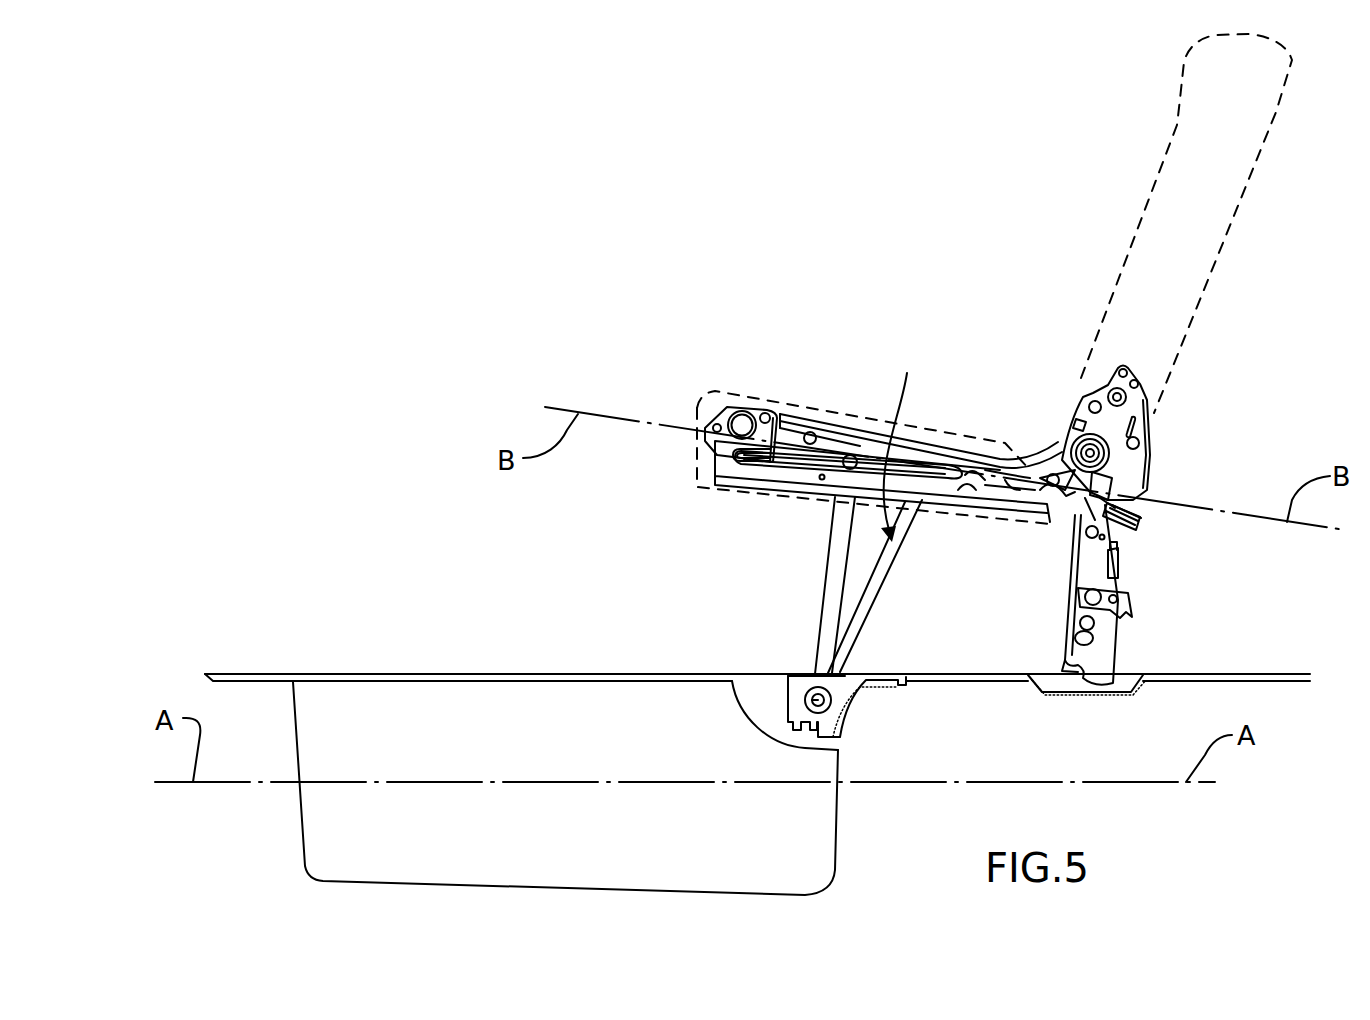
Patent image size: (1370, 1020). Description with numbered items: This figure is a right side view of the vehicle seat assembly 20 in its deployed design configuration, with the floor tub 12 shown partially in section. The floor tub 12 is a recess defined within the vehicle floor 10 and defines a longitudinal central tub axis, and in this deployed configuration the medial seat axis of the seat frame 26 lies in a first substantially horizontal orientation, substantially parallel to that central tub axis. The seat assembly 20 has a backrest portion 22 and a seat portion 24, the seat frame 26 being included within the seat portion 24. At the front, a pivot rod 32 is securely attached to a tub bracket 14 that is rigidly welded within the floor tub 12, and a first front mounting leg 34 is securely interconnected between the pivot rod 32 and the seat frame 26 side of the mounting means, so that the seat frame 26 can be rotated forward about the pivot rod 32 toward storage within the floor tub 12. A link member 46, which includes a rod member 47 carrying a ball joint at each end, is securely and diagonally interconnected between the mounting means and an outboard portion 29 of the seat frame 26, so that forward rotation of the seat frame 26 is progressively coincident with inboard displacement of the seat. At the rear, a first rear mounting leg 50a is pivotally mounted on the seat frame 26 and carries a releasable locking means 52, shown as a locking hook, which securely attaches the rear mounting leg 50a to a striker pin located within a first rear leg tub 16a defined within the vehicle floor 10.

The vehicle floor 10 is at (282, 677).
The floor tub 12 is at (353, 658).
The tub bracket 14 is at (800, 688).
The first rear leg tub 16a is at (1130, 668).
The vehicle seat assembly 20 is at (914, 575).
The backrest portion 22 is at (1196, 150).
The seat portion 24 is at (730, 405).
The seat frame 26 is at (850, 442).
The outboard portion 29 is at (925, 455).
The pivot rod 32 is at (805, 700).
The first front mounting leg 34 is at (835, 578).
The link member 46 is at (901, 439).
The rod member 47 is at (858, 621).
The first rear mounting leg 50a is at (1088, 552).
The releasable locking means 52 is at (1048, 650).